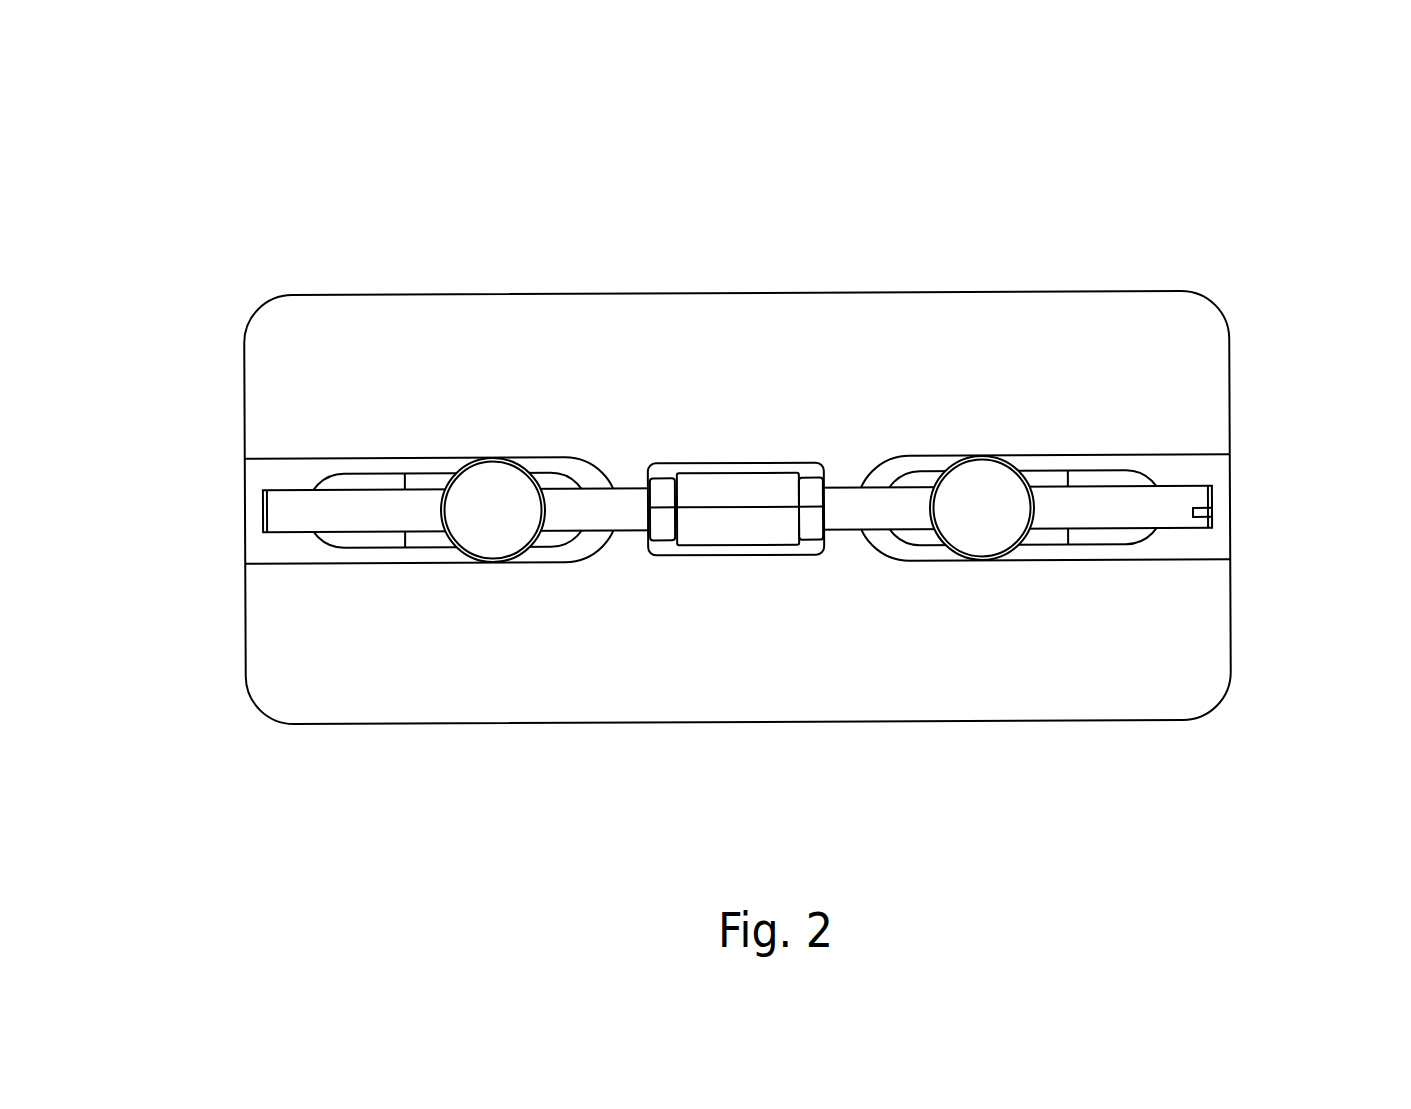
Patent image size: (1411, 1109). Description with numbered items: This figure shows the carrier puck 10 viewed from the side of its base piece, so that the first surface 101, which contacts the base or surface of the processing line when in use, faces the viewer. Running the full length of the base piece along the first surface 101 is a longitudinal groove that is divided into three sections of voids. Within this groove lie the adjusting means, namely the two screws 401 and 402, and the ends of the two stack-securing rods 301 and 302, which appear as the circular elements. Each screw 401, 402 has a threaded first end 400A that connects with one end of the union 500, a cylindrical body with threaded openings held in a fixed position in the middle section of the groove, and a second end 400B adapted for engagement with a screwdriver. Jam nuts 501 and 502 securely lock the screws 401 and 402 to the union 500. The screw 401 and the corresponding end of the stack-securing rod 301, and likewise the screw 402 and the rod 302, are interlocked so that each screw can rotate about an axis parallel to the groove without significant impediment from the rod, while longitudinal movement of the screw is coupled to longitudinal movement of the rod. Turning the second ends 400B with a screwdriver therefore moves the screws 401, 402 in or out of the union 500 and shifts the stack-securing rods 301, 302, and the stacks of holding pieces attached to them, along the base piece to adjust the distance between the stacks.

The carrier puck 10 is at (1260, 146).
The first surface 101 is at (315, 340).
The first stack-securing rod 301 is at (499, 513).
The second stack-securing rod 302 is at (981, 510).
The screw 401 is at (340, 512).
The screw 402 is at (1115, 507).
The first end 400A is at (628, 532).
The second end 400B is at (263, 517).
The union 500 is at (729, 502).
The jam nut 501 is at (658, 490).
The jam nut 502 is at (811, 492).